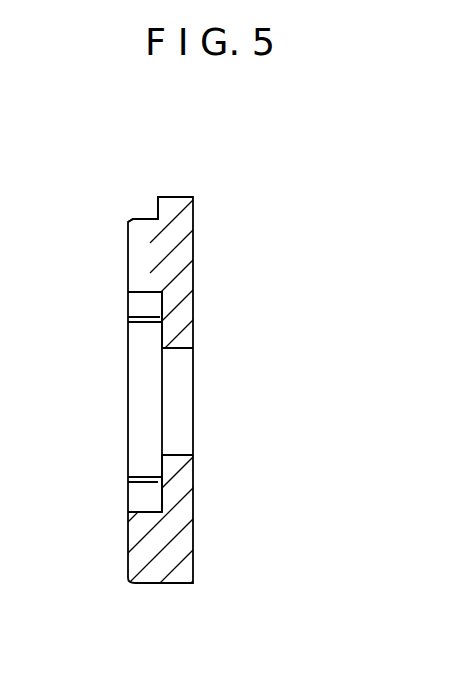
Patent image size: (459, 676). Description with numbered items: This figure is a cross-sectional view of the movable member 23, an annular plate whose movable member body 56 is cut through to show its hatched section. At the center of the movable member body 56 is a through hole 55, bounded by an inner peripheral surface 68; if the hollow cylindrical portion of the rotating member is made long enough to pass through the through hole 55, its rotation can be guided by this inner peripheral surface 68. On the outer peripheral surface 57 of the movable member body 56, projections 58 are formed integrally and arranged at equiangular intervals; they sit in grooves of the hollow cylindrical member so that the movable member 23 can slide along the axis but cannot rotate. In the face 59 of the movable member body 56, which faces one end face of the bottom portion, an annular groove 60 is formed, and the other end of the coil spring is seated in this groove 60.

The movable member 23 is at (242, 260).
The through hole 55 is at (193, 408).
The movable member body 56 is at (193, 303).
The outer peripheral surface 57 is at (167, 585).
The projection 58 is at (178, 205).
The face 59 is at (128, 245).
The annular groove 60 is at (128, 300).
The inner peripheral surface 68 is at (176, 349).